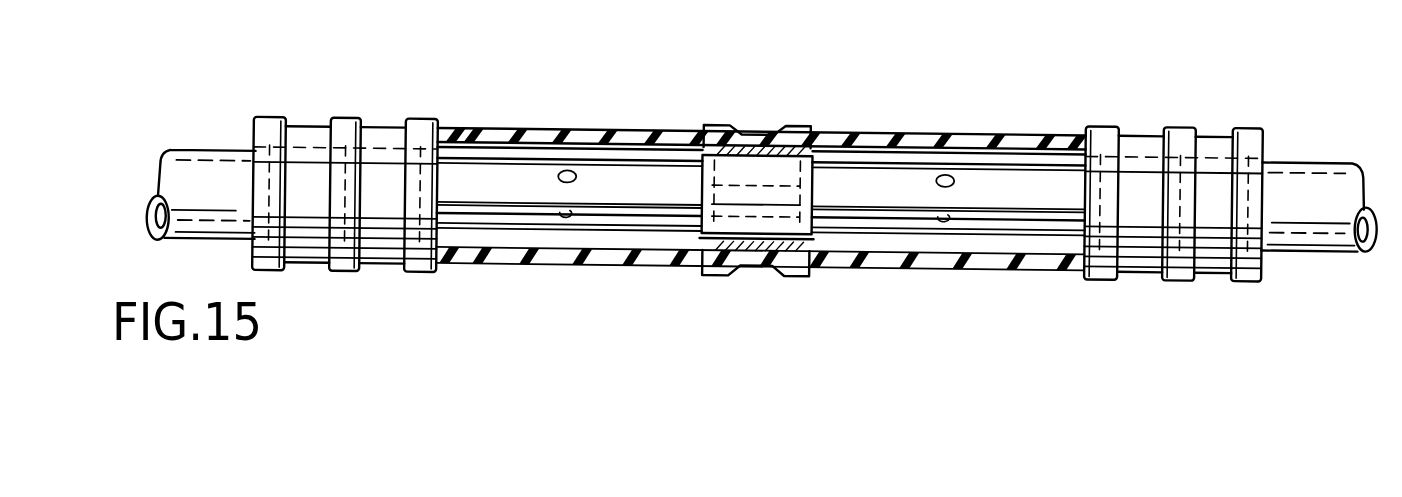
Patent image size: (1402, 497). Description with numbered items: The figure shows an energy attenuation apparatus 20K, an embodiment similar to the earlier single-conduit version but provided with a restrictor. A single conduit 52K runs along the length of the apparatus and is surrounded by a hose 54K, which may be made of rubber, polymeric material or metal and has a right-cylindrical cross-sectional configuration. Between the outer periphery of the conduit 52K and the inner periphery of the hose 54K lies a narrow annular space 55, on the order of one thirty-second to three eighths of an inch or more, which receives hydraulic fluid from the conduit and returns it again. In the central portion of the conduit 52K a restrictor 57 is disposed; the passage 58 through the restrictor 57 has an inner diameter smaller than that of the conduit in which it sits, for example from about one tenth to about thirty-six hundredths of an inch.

The energy attenuation apparatus 20K is at (1032, 121).
The conduit 52K is at (890, 215).
The hose 54K is at (836, 130).
The annular space 55 is at (650, 242).
The restrictor 57 is at (750, 172).
The passage 58 is at (753, 272).